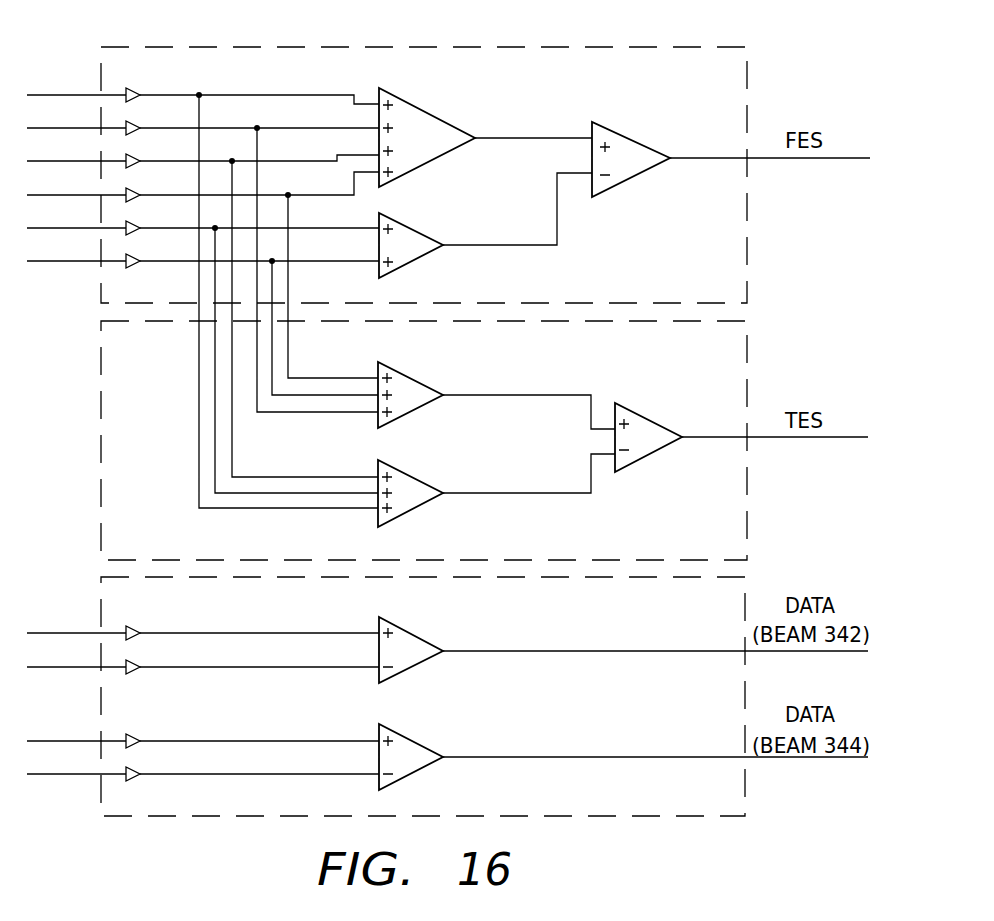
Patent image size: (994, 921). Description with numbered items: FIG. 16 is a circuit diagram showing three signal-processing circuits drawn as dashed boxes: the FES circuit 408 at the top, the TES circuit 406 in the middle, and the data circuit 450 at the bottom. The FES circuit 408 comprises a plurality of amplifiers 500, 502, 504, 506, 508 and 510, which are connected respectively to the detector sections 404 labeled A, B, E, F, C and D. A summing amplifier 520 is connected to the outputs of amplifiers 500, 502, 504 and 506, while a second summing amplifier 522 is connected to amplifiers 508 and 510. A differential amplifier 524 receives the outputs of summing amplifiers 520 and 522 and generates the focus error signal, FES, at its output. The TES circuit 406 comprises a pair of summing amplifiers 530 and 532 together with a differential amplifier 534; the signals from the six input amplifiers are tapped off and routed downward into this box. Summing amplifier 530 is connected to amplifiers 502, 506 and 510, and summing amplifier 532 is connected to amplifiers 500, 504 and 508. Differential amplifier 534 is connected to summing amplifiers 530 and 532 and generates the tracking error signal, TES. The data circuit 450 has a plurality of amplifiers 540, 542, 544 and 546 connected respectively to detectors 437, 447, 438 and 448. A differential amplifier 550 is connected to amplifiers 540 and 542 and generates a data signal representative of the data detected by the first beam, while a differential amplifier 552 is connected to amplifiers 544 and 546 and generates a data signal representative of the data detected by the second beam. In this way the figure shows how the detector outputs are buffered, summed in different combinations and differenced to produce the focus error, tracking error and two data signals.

The detector sections 404 is at (76, 163).
The FES circuit 408 is at (747, 52).
The TES circuit 406 is at (747, 362).
The data circuit 450 is at (745, 582).
The amplifier 500 is at (133, 91).
The amplifier 502 is at (133, 124).
The amplifier 504 is at (133, 157).
The amplifier 506 is at (133, 191).
The amplifier 508 is at (133, 224).
The amplifier 510 is at (133, 257).
The summing amplifier 520 is at (412, 102).
The summing amplifier 522 is at (416, 224).
The differential amplifier 524 is at (622, 131).
The summing amplifier 530 is at (410, 378).
The summing amplifier 532 is at (410, 481).
The differential amplifier 534 is at (648, 416).
The detector 437 is at (76, 620).
The detector 447 is at (76, 653).
The detector 438 is at (76, 727).
The detector 448 is at (76, 760).
The amplifier 540 is at (133, 629).
The amplifier 542 is at (133, 663).
The amplifier 544 is at (133, 737).
The amplifier 546 is at (133, 770).
The differential amplifier 550 is at (412, 636).
The differential amplifier 552 is at (412, 743).